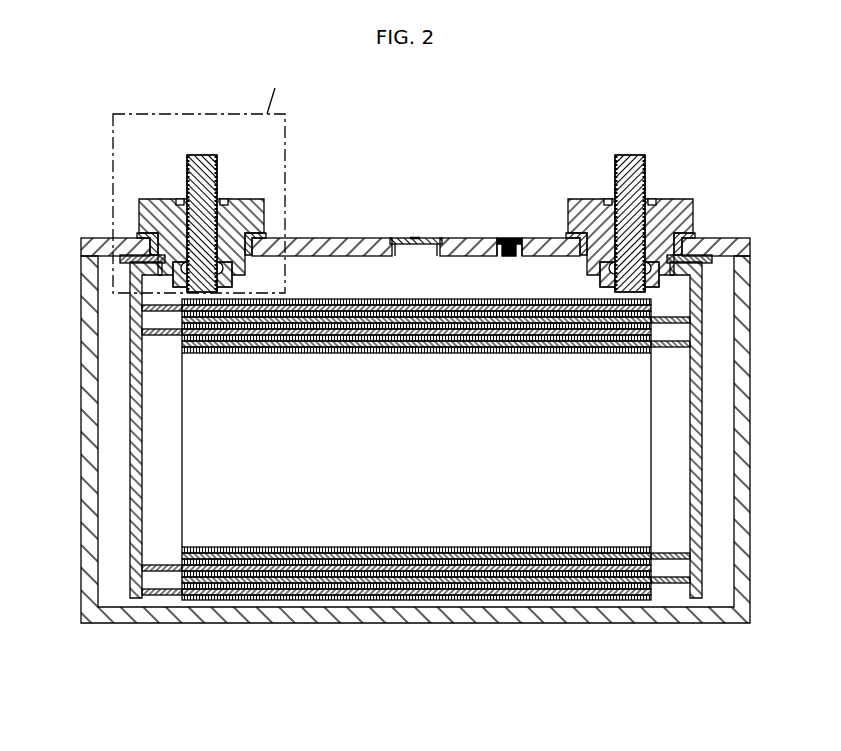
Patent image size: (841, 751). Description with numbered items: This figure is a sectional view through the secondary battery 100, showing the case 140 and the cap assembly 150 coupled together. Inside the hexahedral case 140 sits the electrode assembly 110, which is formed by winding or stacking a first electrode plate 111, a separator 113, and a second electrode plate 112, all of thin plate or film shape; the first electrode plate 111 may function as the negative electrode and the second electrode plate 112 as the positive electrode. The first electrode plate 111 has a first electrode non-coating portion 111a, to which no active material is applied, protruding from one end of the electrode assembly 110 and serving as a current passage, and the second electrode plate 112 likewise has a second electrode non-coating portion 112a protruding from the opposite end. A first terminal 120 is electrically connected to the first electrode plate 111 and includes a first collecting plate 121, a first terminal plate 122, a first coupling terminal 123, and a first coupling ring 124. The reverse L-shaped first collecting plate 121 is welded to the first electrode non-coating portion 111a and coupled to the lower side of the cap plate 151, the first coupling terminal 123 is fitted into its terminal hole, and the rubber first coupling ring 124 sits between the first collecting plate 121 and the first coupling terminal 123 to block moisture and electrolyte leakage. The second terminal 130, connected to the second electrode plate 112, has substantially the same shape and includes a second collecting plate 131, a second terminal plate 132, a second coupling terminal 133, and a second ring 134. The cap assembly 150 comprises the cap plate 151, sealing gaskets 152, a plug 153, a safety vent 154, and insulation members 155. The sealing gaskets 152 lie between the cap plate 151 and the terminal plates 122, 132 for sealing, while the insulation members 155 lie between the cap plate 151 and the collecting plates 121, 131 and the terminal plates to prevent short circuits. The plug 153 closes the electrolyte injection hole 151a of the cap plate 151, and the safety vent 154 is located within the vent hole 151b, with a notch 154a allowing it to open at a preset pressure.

The secondary battery 100 is at (781, 93).
The electrode assembly 110 is at (505, 607).
The first electrode plate 111 is at (295, 590).
The first electrode non-coating portion 111a is at (160, 595).
The second electrode plate 112 is at (572, 580).
The second electrode non-coating portion 112a is at (672, 584).
The separator 113 is at (430, 592).
The first terminal 120 is at (201, 140).
The first collecting plate 121 is at (128, 410).
The first terminal plate 122 is at (156, 196).
The first coupling terminal 123 is at (184, 172).
The first coupling ring 124 is at (165, 292).
The second terminal 130 is at (631, 140).
The second collecting plate 131 is at (705, 410).
The second terminal plate 132 is at (678, 196).
The second coupling terminal 133 is at (647, 172).
The second ring 134 is at (655, 289).
The case 140 is at (743, 346).
The cap assembly 150 is at (470, 158).
The cap plate 151 is at (330, 238).
The electrolyte injection hole 151a is at (503, 257).
The vent hole 151b is at (417, 256).
The sealing gasket 152 is at (130, 235).
The plug 153 is at (503, 238).
The safety vent 154 is at (438, 238).
The notch 154a is at (413, 238).
The insulation member 155 is at (120, 259).